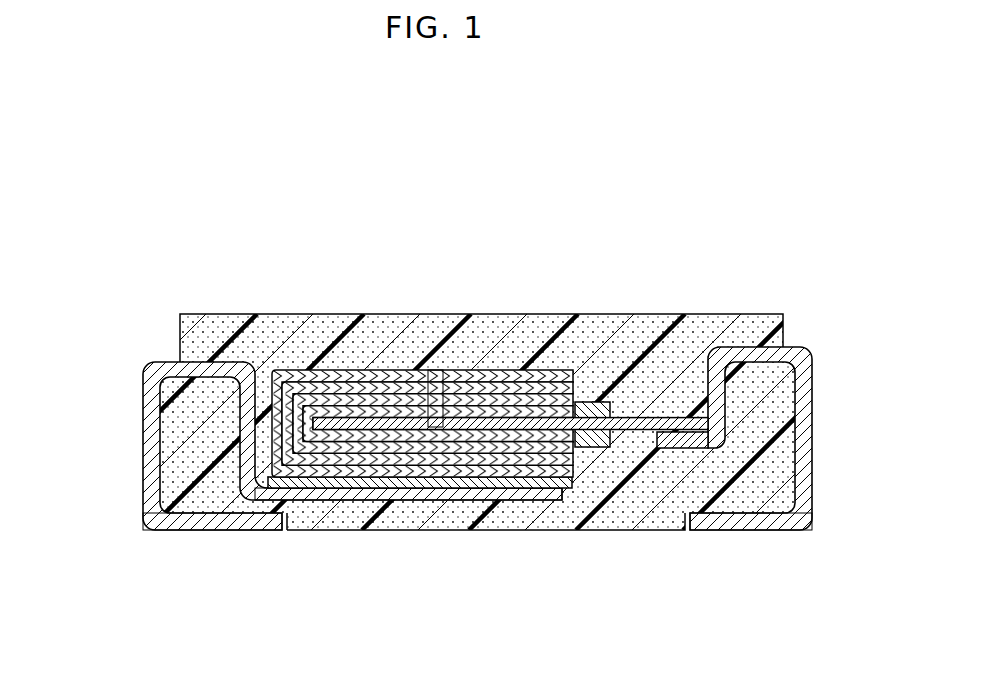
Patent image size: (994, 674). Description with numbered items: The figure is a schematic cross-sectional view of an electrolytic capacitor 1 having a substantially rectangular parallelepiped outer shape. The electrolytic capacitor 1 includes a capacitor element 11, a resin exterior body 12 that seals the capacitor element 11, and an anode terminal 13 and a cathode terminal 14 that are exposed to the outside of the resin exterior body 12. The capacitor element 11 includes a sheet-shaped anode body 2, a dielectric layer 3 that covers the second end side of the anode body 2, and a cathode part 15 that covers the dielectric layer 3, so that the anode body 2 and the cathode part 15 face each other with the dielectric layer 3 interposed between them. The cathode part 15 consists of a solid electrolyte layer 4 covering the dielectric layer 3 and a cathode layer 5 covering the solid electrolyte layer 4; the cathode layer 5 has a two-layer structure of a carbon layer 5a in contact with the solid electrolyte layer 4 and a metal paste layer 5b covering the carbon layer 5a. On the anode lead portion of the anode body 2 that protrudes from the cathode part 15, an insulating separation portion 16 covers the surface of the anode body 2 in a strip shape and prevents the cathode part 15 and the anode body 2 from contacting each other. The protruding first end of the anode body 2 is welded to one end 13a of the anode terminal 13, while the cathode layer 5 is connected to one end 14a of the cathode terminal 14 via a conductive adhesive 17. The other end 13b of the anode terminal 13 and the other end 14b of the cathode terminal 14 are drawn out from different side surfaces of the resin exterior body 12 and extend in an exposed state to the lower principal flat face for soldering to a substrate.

The electrolytic capacitor 1 is at (832, 300).
The anode body 2 is at (649, 415).
The dielectric layer 3 is at (480, 400).
The solid electrolyte layer 4 is at (412, 392).
The cathode layer 5 is at (422, 347).
The carbon layer 5a is at (313, 380).
The metal paste layer 5b is at (366, 385).
The capacitor element 11 is at (490, 295).
The resin exterior body 12 is at (361, 512).
The anode terminal 13 is at (809, 420).
The one end of anode terminal 13a is at (661, 450).
The other end of anode terminal 13b is at (717, 521).
The cathode terminal 14 is at (150, 466).
The one end of cathode terminal 14a is at (472, 495).
The other end of cathode terminal 14b is at (251, 524).
The cathode part 15 is at (422, 323).
The separation portion 16 is at (598, 449).
The conductive adhesive 17 is at (430, 484).